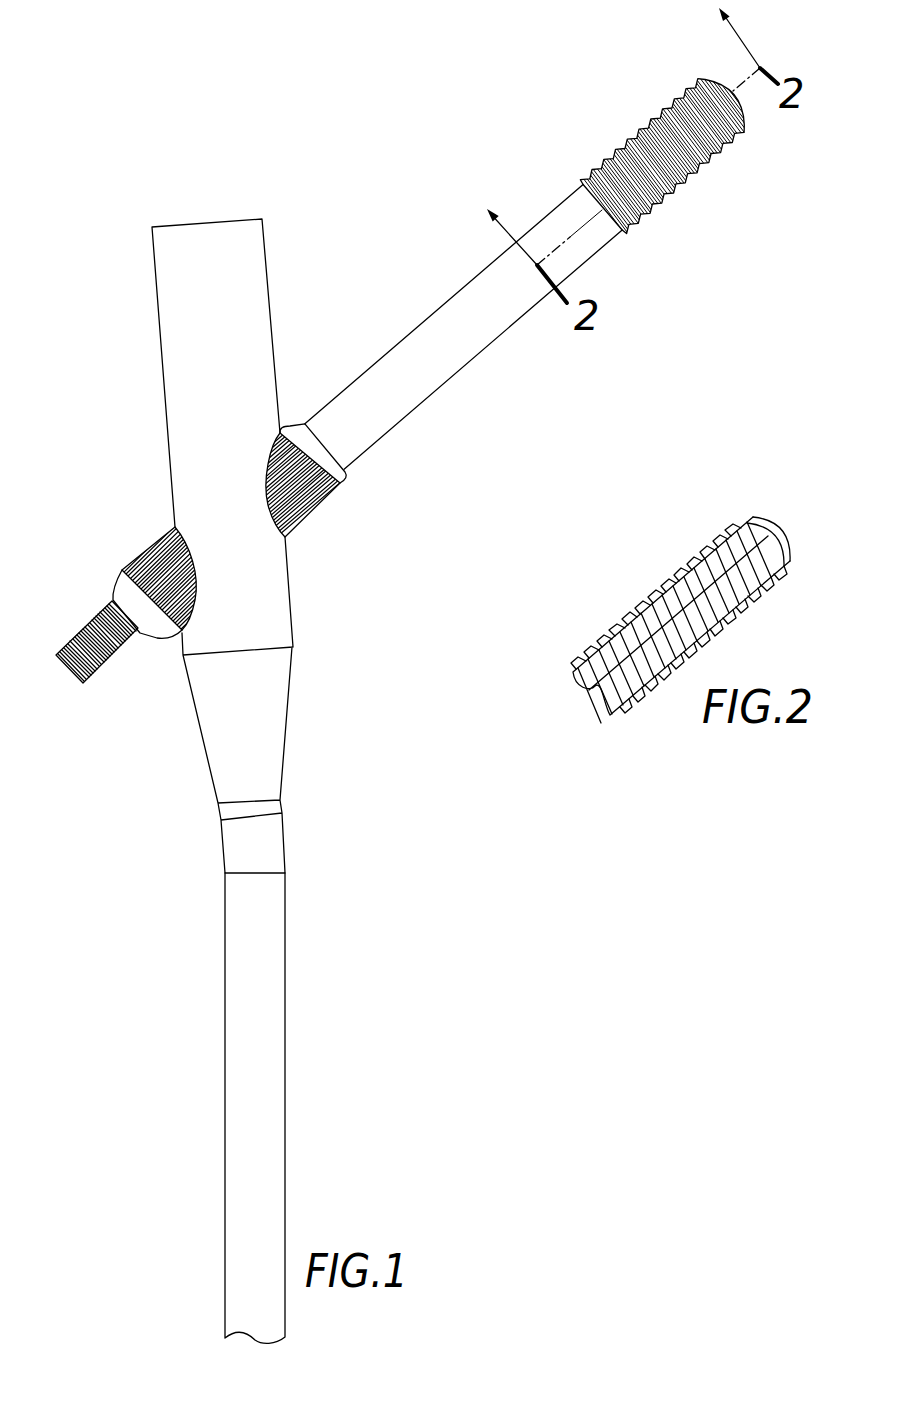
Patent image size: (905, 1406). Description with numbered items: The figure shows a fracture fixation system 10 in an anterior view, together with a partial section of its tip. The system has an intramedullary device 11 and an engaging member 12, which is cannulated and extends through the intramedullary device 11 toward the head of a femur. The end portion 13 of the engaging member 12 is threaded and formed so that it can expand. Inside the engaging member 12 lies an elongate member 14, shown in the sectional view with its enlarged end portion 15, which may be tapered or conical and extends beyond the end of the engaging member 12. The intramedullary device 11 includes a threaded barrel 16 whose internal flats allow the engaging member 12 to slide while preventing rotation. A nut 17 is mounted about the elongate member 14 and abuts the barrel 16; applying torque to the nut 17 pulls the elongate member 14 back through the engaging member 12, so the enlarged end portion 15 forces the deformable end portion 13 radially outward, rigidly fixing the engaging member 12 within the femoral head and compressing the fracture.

In FIG. 1, the fracture fixation system 10 is at (142, 288).
In FIG. 1, the intramedullary device 11 is at (285, 968).
In FIG. 1, the engaging member 12 is at (372, 364).
In FIG. 1, the end portion 13 is at (748, 118).
In FIG. 1, the elongate member 14 is at (62, 665).
In FIG. 2, the elongate member 14 is at (597, 683).
In FIG. 2, the enlarged end portion 15 is at (772, 530).
In FIG. 1, the barrel 16 is at (300, 523).
In FIG. 1, the nut 17 is at (113, 600).